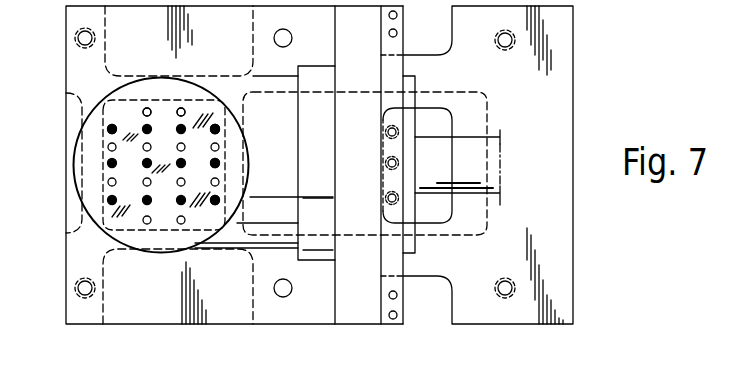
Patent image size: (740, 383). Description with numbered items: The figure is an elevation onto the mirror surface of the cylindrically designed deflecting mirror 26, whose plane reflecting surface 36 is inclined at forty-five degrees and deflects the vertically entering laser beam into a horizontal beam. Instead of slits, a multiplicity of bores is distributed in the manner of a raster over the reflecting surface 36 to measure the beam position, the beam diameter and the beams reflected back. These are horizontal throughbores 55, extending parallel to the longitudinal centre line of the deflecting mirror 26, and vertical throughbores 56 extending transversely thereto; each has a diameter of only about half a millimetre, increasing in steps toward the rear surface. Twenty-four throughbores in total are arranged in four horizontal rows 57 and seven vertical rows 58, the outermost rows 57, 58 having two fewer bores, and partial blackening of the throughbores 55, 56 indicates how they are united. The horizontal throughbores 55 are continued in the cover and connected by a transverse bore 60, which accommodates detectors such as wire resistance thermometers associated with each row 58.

The deflecting mirror 26 is at (241, 234).
The plane reflecting surface 36 is at (170, 210).
The throughbores 55 is at (107, 200).
The throughbores 56 is at (107, 182).
The horizontal rows 57 is at (211, 118).
The vertical rows 58 is at (223, 134).
The bore 60 is at (386, 194).